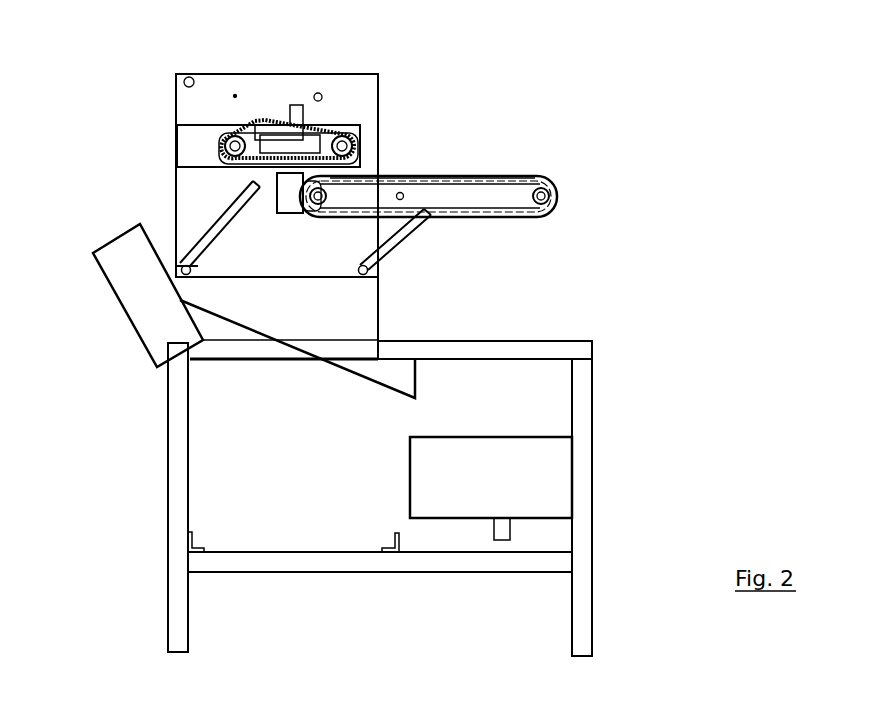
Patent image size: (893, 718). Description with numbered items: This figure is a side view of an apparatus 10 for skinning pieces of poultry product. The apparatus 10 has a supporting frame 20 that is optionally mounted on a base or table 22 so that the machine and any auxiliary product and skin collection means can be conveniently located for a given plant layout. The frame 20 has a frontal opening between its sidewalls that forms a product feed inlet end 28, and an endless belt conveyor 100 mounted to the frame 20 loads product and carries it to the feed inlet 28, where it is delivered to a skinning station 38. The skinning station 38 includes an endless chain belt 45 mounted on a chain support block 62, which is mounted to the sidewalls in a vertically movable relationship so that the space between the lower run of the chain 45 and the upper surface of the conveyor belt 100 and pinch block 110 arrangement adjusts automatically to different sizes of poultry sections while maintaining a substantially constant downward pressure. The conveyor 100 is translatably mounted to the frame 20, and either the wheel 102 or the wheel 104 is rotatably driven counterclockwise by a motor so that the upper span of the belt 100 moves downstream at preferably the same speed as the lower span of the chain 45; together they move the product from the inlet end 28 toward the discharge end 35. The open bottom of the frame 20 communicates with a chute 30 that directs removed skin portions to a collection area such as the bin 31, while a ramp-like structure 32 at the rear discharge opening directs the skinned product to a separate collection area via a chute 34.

The apparatus 10 is at (648, 150).
The supporting frame 20 is at (273, 260).
The base or table 22 is at (632, 424).
The product feed inlet end 28 is at (555, 160).
The chute 30 is at (342, 331).
The bin 31 is at (494, 490).
The ramp-like structure 32 is at (215, 231).
The chute 34 is at (165, 305).
The discharge end 35 is at (150, 220).
The skinning station 38 is at (372, 159).
The endless chain belt 45 is at (247, 122).
The chain support block 62 is at (281, 132).
The endless belt conveyor 100 is at (456, 180).
The wheel 102 is at (320, 204).
The wheel 104 is at (553, 203).
The pinch block 110 is at (290, 200).